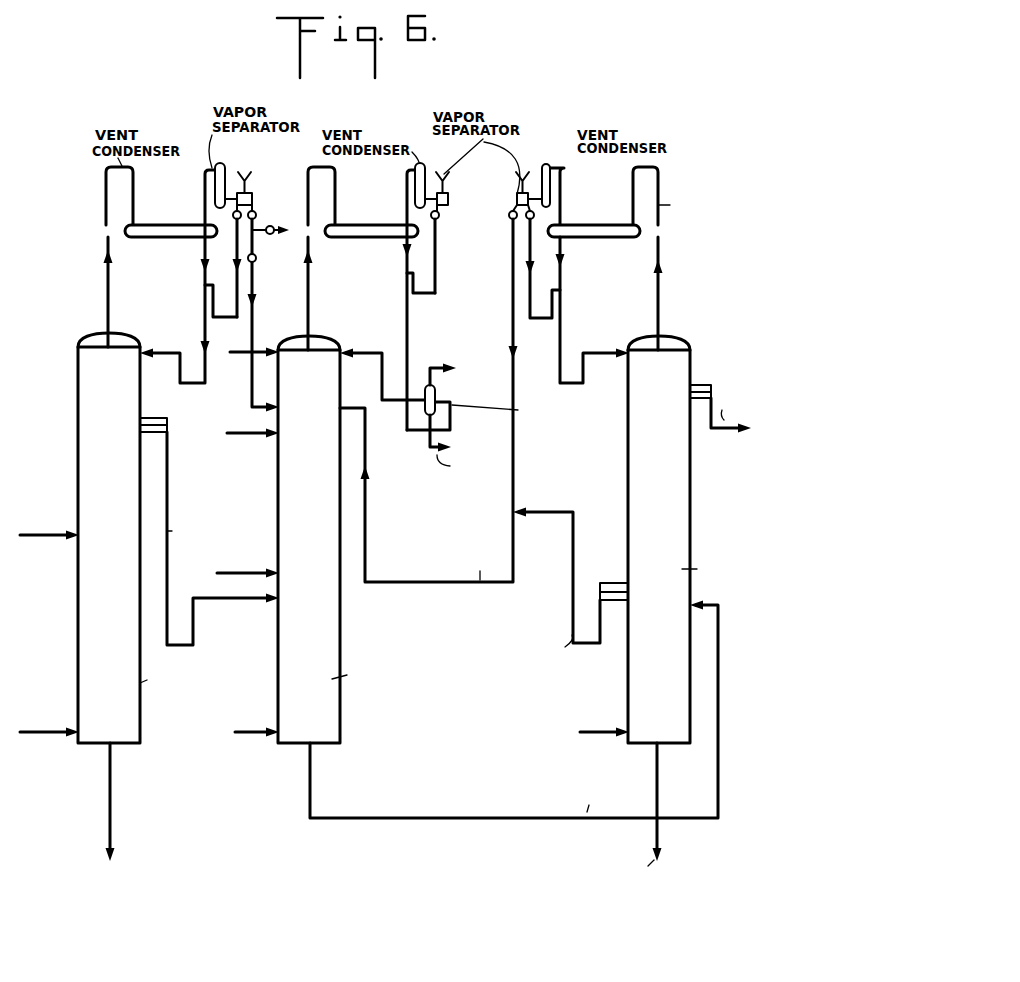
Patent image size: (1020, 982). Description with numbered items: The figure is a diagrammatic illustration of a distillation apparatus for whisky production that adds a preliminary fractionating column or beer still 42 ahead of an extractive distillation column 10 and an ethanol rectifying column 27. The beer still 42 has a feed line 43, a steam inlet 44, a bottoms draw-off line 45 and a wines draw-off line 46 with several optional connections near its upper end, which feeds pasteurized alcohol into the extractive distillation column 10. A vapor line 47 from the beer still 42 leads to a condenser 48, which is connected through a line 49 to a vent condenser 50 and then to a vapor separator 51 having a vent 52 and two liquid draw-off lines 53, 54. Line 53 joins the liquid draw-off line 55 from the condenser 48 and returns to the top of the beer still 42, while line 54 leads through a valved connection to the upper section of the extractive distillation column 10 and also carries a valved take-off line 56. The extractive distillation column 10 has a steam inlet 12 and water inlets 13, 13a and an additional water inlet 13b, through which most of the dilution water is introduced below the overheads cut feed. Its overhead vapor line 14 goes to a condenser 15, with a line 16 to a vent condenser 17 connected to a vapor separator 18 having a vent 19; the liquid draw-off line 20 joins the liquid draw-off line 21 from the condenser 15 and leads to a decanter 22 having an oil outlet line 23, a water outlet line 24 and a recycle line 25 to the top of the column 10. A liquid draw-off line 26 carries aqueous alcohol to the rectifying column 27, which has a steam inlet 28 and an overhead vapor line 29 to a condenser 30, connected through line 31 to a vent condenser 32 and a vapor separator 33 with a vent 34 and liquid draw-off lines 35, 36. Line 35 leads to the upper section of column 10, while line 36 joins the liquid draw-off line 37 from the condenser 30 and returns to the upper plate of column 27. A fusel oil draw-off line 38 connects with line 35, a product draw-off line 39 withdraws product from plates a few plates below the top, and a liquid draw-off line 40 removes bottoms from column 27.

The extractive distillation column 10 is at (340, 625).
The steam inlet 12 is at (255, 728).
The water inlet 13 is at (236, 354).
The water inlet 13a is at (242, 566).
The additional water inlet 13b is at (240, 437).
The overhead vapor line 14 is at (309, 282).
The condenser 15 is at (370, 226).
The line 16 is at (406, 185).
The vent condenser 17 is at (426, 178).
The vapor separator 18 is at (449, 198).
The vent 19 is at (447, 173).
The liquid draw-off line 20 is at (436, 247).
The liquid draw-off line 21 is at (406, 283).
The decanter 22 is at (436, 396).
The oil outlet line 23 is at (434, 366).
The water outlet line 24 is at (432, 447).
The recycle line 25 is at (382, 380).
The liquid draw-off line 26 is at (382, 817).
The ethanol rectifying column 27 is at (690, 541).
The steam inlet 28 is at (600, 732).
The overhead vapor line 29 is at (659, 246).
The condenser 30 is at (607, 237).
The line 31 is at (561, 200).
The vent condenser 32 is at (553, 160).
The vapor separator 33 is at (516, 203).
The vent 34 is at (520, 190).
The liquid draw-off line 35 is at (512, 295).
The liquid draw-off line 36 is at (535, 250).
The liquid draw-off line 37 is at (562, 284).
The fusel oil draw-off line 38 is at (572, 626).
The product draw-off line 39 is at (727, 430).
The liquid draw-off line 40 is at (658, 780).
The preliminary fractionating column 42 is at (78, 580).
The feed line 43 is at (49, 537).
The steam inlet 44 is at (49, 733).
The bottoms draw-off line 45 is at (110, 775).
The wines draw-off line 46 is at (167, 496).
The vapor line 47 is at (110, 283).
The condenser 48 is at (156, 228).
The line 49 is at (186, 295).
The vent condenser 50 is at (224, 172).
The vapor separator 51 is at (253, 195).
The vent 52 is at (250, 175).
The liquid draw-off line 53 is at (232, 230).
The liquid draw-off line 54 is at (273, 227).
The liquid draw-off line 55 is at (204, 293).
The valved take-off line 56 is at (256, 259).